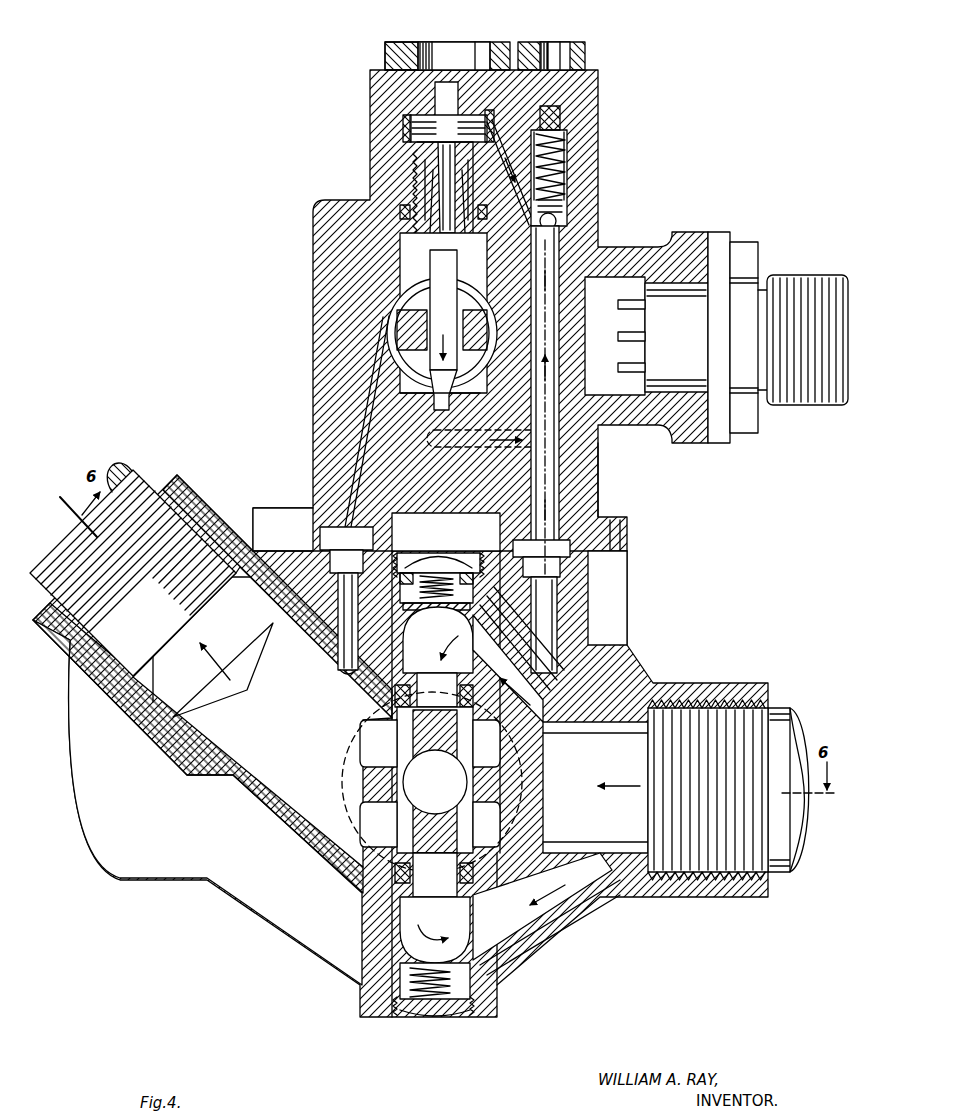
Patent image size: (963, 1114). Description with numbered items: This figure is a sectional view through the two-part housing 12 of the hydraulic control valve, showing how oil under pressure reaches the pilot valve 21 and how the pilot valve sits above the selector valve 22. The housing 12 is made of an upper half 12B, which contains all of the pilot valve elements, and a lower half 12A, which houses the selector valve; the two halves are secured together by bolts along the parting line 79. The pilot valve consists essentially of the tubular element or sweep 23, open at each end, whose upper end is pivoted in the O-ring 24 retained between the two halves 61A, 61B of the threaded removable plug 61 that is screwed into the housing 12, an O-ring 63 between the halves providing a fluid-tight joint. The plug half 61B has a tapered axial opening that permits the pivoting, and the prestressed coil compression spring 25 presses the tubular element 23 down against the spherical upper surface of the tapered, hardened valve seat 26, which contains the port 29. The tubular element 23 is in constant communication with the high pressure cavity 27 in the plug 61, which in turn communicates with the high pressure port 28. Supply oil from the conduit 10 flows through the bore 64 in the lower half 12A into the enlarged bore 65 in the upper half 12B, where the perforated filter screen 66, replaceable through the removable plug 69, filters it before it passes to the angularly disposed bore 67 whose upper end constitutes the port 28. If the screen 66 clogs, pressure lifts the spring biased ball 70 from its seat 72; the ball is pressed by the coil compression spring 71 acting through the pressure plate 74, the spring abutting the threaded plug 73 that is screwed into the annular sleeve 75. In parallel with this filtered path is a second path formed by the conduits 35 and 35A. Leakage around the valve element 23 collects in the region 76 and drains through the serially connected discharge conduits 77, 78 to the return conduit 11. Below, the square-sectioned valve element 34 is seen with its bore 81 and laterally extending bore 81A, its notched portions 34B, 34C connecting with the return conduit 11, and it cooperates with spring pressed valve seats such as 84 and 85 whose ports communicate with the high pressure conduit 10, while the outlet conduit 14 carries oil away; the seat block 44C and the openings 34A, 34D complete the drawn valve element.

The conduit 10 is at (790, 708).
The return conduit 11 is at (152, 478).
The housing 12 is at (688, 644).
The lower half of the housing 12A is at (600, 576).
The upper half of the housing 12B is at (578, 453).
The conduit 14 is at (147, 876).
The pilot valve 21 is at (388, 312).
The selector valve 22 is at (288, 832).
The tubular element 23 is at (430, 196).
The O-ring 24 is at (418, 150).
The coil compression spring 25 is at (400, 249).
The valve seat 26 is at (405, 401).
The high pressure cavity 27 is at (437, 99).
The high pressure port 28 is at (405, 125).
The port 29 is at (430, 446).
The valve element 34 is at (487, 781).
The port 34A is at (488, 735).
The notched portion 34B is at (383, 746).
The notched portion 34C is at (360, 782).
The port 34D is at (497, 822).
The conduit 35 is at (478, 684).
The conduit 35A is at (470, 938).
The seat block 44C is at (398, 333).
The threaded removable plug 61 is at (455, 45).
The plug half 61A is at (385, 56).
The plug half 61B is at (425, 172).
The O-ring 63 is at (402, 210).
The bore 64 is at (562, 600).
The enlarged bore 65 is at (560, 509).
The filter screen 66 is at (584, 350).
The angularly disposed bore 67 is at (559, 118).
The removable plug 69 is at (572, 48).
The spring biased ball 70 is at (557, 221).
The coil compression spring 71 is at (560, 168).
The seat 72 is at (562, 236).
The threaded plug 73 is at (565, 141).
The pressure plate 74 is at (560, 192).
The annular sleeve 75 is at (566, 152).
The region 76 is at (420, 302).
The discharge conduit 77 is at (345, 483).
The discharge conduit 78 is at (342, 672).
The parting line 79 is at (618, 546).
The bore 81 is at (462, 778).
The laterally extending bore 81A is at (430, 737).
The valve seat 84 is at (438, 657).
The valve seat 85 is at (398, 876).